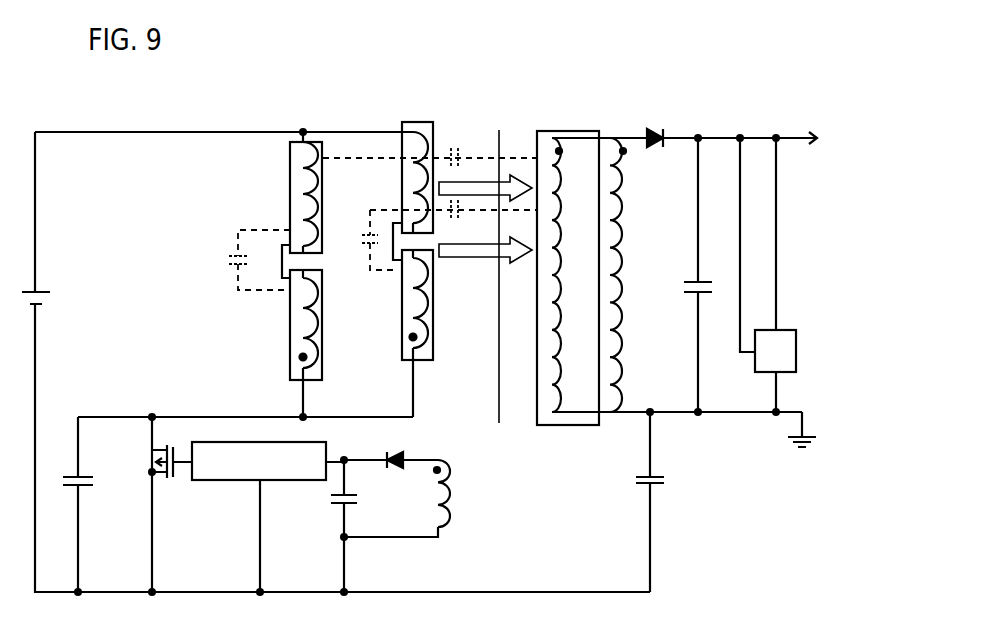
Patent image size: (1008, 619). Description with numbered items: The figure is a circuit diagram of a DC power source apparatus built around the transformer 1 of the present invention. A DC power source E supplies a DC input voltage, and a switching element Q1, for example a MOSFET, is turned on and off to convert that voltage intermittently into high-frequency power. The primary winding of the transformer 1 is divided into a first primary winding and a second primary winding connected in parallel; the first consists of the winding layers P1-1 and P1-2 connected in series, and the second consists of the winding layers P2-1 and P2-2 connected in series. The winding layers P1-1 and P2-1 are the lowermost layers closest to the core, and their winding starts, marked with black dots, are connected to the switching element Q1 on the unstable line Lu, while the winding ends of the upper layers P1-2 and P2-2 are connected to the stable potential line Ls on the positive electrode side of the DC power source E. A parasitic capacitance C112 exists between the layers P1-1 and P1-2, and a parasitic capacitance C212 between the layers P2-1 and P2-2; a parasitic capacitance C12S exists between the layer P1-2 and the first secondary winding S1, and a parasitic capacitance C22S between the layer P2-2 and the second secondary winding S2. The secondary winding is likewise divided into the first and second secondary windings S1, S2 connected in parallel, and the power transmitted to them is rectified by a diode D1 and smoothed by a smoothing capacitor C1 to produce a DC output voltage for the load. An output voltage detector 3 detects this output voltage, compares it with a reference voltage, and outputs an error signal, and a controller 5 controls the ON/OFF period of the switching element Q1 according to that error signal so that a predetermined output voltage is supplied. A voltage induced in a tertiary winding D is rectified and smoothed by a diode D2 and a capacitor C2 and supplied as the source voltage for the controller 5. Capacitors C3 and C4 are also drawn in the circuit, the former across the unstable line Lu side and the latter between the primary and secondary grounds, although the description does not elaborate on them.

The transformer 1 is at (467, 62).
The output voltage detector 3 is at (797, 355).
The controller 5 is at (228, 481).
The DC power source E is at (48, 302).
The stable potential line Ls is at (178, 132).
The unstable line Lu is at (180, 417).
The winding layer P1-2 is at (275, 205).
The winding layer P1-1 is at (274, 343).
The winding layer P2-2 is at (403, 176).
The winding layer P2-1 is at (395, 333).
The parasitic capacitance C112 is at (226, 260).
The parasitic capacitance C212 is at (368, 246).
The parasitic capacitance C12S is at (455, 148).
The parasitic capacitance C22S is at (458, 221).
The first secondary winding S1 is at (573, 278).
The second secondary winding S2 is at (706, 275).
The diode D1 is at (728, 121).
The diode D2 is at (393, 451).
The tertiary winding D is at (397, 498).
The smoothing capacitor C1 is at (689, 275).
The capacitor C2 is at (326, 526).
The capacitor C3 is at (90, 504).
The capacitor C4 is at (664, 502).
The switching element Q1 is at (172, 504).